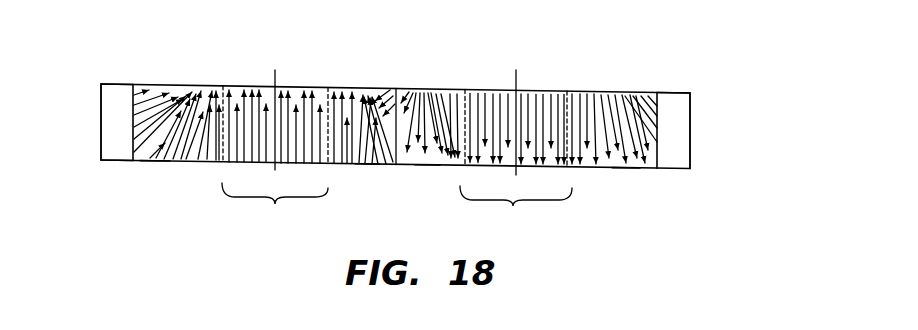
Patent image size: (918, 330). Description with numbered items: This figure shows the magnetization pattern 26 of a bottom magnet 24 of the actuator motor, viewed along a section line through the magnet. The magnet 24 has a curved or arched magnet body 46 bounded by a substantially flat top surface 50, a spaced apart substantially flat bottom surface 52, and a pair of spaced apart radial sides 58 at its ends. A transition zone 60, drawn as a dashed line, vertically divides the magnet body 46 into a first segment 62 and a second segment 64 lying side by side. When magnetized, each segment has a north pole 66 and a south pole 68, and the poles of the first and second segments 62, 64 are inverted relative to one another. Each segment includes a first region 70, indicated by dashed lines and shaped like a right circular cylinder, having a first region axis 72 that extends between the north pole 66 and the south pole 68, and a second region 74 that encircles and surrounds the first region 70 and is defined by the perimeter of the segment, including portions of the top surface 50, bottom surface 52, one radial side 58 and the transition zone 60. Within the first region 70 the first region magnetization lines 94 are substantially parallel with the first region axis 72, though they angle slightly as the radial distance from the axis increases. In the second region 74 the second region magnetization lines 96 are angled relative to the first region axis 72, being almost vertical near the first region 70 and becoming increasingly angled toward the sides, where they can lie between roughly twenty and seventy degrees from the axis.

The magnet 24 is at (690, 66).
The magnetization pattern 26 is at (178, 92).
The magnet body 46 is at (690, 102).
The top surface 50 is at (124, 83).
The bottom surface 52 is at (120, 162).
The radial side 58 is at (100, 113).
The transition zone 60 is at (378, 86).
The first segment 62 is at (333, 83).
The second segment 64 is at (436, 84).
The north pole 66 is at (313, 86).
The south pole 68 is at (283, 163).
The first region 70 is at (397, 211).
The first region axis 72 is at (275, 70).
The second region 74 is at (156, 164).
The first region magnetization lines 94 is at (243, 97).
The second region magnetization lines 96 is at (187, 95).